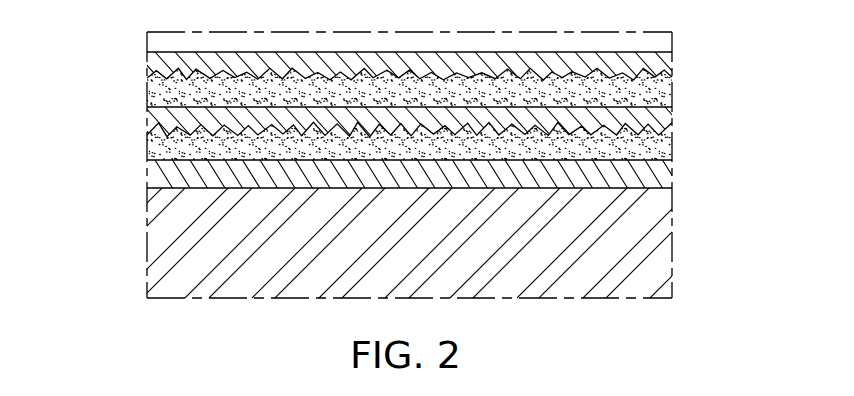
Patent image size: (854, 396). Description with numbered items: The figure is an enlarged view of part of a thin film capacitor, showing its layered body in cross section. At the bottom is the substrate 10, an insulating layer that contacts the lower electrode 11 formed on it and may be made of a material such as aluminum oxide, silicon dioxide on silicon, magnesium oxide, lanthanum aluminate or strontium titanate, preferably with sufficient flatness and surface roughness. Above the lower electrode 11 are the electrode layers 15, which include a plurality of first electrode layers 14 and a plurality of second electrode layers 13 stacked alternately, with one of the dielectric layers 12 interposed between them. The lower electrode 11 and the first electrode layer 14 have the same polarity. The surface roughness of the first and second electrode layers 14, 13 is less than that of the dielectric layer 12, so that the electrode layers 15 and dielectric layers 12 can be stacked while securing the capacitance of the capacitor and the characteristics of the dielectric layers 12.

The substrate 10 is at (665, 250).
The lower electrode 11 is at (672, 171).
The dielectric layer 12 is at (147, 148).
The second electrode layer 13 is at (672, 118).
The first electrode layer 14 is at (672, 65).
The electrode layers 15 is at (744, 53).